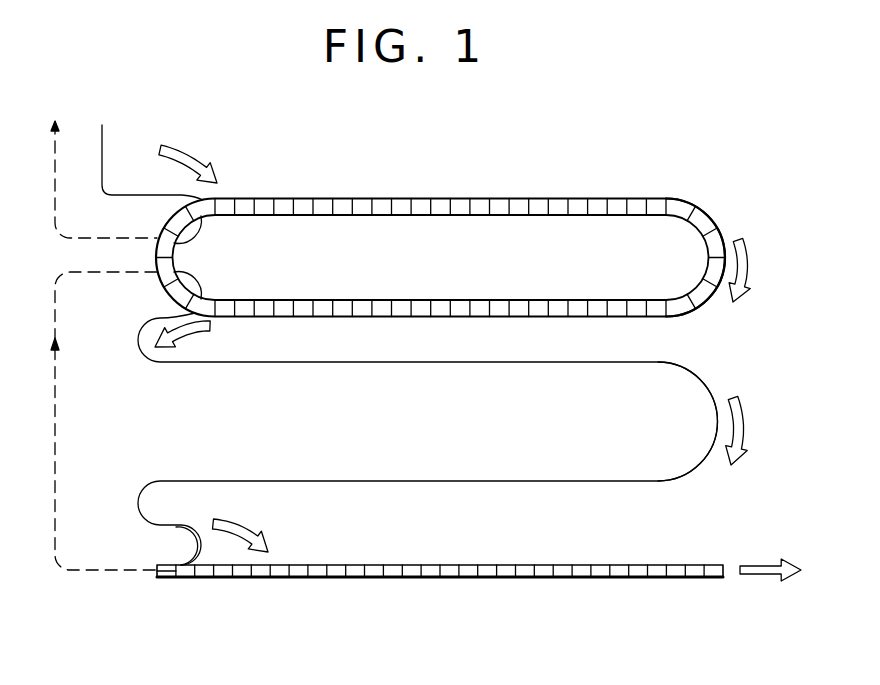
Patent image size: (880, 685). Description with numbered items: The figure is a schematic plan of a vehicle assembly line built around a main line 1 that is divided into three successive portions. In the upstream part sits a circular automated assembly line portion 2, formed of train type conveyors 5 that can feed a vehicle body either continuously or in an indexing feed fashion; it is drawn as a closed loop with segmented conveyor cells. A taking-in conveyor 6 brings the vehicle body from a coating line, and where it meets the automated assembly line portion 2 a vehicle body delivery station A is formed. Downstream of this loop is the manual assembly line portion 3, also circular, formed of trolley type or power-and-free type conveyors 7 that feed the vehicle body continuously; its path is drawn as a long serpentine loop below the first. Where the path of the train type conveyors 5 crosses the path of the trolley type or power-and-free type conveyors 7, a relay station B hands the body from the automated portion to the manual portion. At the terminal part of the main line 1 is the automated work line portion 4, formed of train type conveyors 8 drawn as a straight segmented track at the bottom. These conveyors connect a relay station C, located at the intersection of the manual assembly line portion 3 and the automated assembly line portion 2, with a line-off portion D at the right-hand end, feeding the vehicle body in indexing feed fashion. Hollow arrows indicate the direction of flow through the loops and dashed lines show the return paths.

The main line 1 is at (601, 180).
The automated assembly line portion 2 is at (708, 206).
The manual assembly line portion 3 is at (712, 373).
The automated work line portion 4 is at (661, 556).
The train type conveyors 5 is at (418, 198).
The taking-in conveyor 6 is at (112, 145).
The trolley type or power-and-free type conveyors 7 is at (418, 364).
The train type conveyors 8 is at (398, 565).
The vehicle body delivery station A is at (209, 218).
The relay station B is at (206, 292).
The relay station C is at (181, 555).
The line-off portion D is at (714, 584).